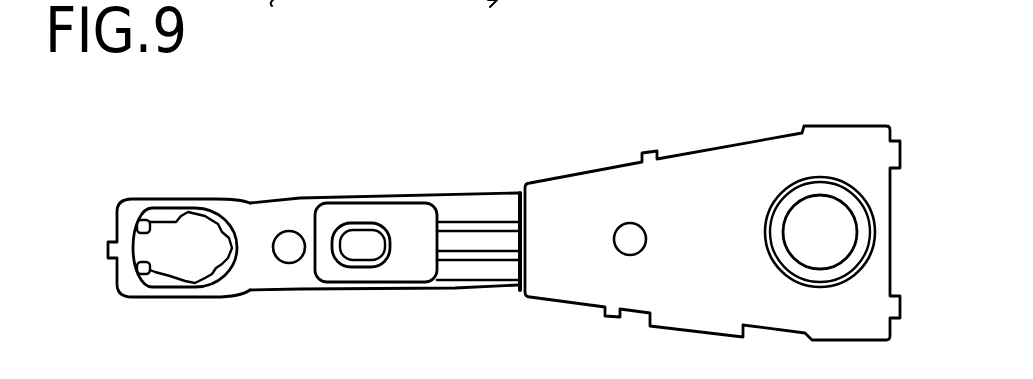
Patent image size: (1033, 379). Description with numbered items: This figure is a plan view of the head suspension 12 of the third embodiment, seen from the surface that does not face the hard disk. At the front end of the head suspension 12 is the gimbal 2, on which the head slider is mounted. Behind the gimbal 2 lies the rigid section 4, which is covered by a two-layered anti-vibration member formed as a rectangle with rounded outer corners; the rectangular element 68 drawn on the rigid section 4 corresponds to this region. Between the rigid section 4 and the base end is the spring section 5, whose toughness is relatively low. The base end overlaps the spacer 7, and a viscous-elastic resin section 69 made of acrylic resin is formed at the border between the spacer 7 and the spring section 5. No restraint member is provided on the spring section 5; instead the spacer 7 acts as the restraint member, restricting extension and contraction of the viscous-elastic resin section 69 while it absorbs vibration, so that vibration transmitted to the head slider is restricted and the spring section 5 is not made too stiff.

The gimbal 2 is at (185, 227).
The head suspension 12 is at (287, 202).
The rigid section 4 is at (300, 272).
The rectangular frame 68 is at (393, 213).
The spring section 5 is at (458, 273).
The viscous-elastic resin section 69 is at (518, 212).
The spacer 7 is at (738, 168).